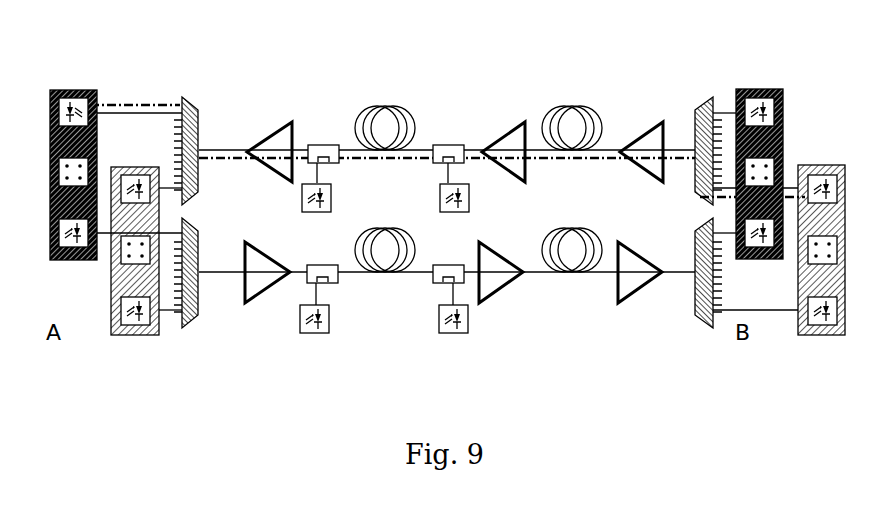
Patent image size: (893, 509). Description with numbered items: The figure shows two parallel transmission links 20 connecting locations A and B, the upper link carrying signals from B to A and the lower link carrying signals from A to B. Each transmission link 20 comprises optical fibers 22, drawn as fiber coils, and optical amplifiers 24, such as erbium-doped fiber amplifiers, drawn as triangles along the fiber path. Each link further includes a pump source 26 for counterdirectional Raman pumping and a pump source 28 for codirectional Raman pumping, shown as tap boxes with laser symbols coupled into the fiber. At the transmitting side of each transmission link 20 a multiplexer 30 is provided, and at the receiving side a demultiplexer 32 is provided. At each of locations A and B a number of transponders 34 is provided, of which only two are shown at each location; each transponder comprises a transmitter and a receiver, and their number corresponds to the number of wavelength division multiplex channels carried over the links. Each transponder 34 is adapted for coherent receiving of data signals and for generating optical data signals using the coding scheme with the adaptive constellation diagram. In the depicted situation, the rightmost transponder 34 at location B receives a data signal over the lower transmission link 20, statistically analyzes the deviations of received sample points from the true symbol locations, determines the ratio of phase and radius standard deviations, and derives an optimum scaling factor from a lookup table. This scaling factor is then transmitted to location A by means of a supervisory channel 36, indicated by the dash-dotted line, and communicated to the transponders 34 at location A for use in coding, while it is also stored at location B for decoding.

The transmission link 20 is at (651, 80).
The optical fiber 22 is at (382, 106).
The optical amplifier 24 is at (268, 135).
The pump source for counterdirectional Raman pumping 26 is at (302, 205).
The pump source for codirectional Raman pumping 28 is at (471, 198).
The multiplexer 30 is at (199, 303).
The demultiplexer 32 is at (199, 119).
The transponder 34 is at (50, 248).
The supervisory channel 36 is at (173, 103).